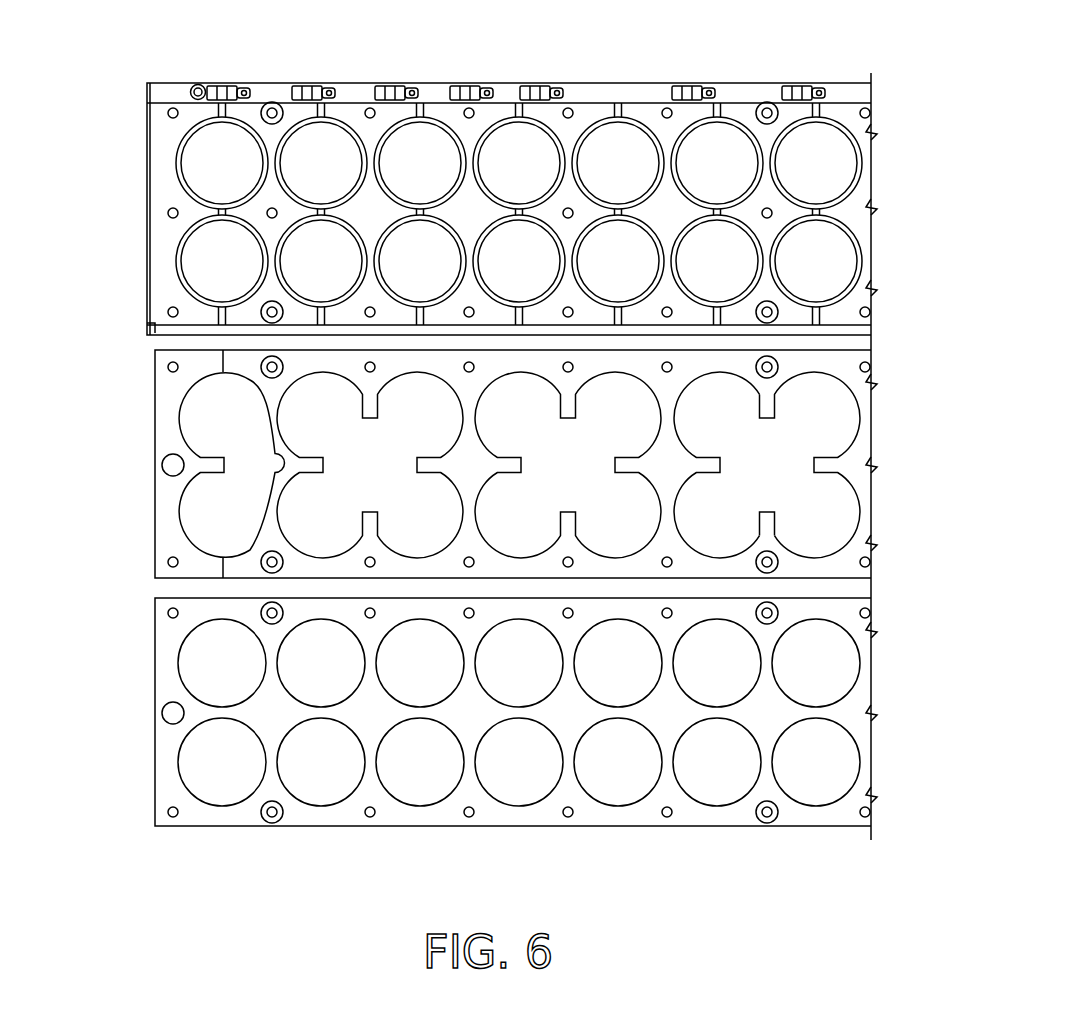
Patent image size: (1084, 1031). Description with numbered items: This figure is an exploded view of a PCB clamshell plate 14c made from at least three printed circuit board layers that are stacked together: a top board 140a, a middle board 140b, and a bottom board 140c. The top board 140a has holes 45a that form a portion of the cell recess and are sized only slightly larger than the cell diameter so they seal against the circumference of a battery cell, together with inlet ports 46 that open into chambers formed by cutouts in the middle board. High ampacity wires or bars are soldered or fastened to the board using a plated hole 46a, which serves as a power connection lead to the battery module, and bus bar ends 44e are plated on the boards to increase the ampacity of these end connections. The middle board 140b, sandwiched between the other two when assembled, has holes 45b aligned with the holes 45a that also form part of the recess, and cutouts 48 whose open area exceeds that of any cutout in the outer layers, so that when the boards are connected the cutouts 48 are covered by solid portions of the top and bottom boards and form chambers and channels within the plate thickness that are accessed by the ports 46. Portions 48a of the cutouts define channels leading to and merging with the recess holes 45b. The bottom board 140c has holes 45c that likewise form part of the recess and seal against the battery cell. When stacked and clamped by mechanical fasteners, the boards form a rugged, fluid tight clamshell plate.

The PCB clamshell plate 14c is at (803, 904).
The top board 140a is at (500, 197).
The middle board 140b is at (500, 474).
The bottom board 140c is at (509, 712).
The holes 45a is at (860, 170).
The holes 45b is at (619, 465).
The holes 45c is at (569, 712).
The inlet ports 46 is at (268, 208).
The plated hole 46a is at (165, 216).
The cutouts 48 is at (807, 440).
The portions of the cutouts 48a is at (768, 503).
The bus bar ends 44e is at (162, 497).